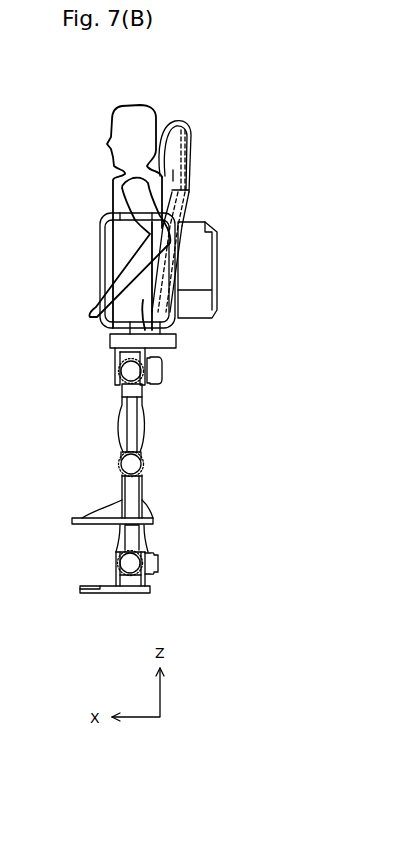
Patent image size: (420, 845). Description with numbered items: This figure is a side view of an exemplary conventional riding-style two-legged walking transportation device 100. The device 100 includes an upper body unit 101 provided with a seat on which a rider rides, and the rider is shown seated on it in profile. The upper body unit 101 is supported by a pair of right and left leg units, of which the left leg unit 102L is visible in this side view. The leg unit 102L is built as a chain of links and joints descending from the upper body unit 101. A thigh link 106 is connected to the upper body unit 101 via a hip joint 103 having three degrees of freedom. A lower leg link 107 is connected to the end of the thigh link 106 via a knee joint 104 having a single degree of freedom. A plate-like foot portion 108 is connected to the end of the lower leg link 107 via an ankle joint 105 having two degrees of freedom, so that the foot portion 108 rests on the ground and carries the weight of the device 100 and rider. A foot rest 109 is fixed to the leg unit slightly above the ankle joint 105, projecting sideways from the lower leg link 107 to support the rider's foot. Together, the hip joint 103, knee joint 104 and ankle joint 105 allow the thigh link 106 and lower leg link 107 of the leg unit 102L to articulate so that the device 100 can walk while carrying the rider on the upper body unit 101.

The two-legged walking transportation device 100 is at (199, 86).
The upper body unit 101 is at (85, 277).
The left leg unit 102L is at (225, 350).
The hip joint 103 is at (168, 372).
The knee joint 104 is at (148, 465).
The ankle joint 105 is at (168, 563).
The thigh link 106 is at (142, 420).
The lower leg link 107 is at (133, 493).
The foot portion 108 is at (108, 586).
The foot rest 109 is at (80, 518).